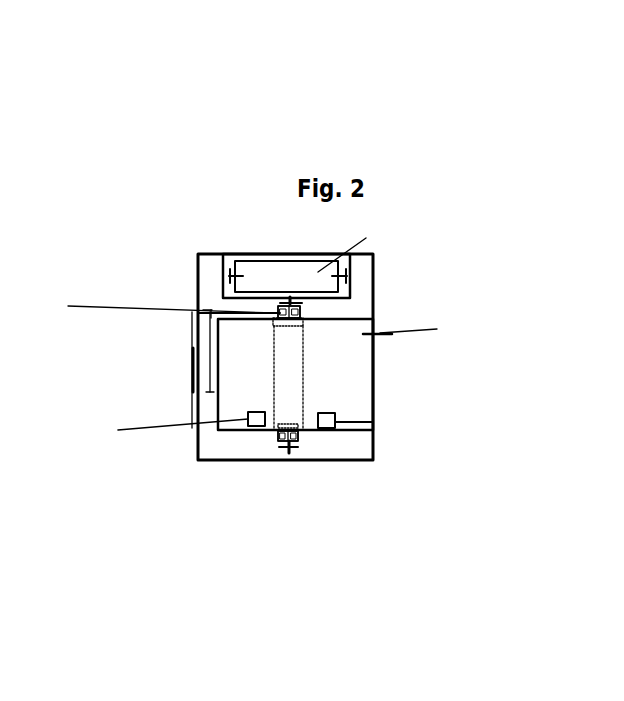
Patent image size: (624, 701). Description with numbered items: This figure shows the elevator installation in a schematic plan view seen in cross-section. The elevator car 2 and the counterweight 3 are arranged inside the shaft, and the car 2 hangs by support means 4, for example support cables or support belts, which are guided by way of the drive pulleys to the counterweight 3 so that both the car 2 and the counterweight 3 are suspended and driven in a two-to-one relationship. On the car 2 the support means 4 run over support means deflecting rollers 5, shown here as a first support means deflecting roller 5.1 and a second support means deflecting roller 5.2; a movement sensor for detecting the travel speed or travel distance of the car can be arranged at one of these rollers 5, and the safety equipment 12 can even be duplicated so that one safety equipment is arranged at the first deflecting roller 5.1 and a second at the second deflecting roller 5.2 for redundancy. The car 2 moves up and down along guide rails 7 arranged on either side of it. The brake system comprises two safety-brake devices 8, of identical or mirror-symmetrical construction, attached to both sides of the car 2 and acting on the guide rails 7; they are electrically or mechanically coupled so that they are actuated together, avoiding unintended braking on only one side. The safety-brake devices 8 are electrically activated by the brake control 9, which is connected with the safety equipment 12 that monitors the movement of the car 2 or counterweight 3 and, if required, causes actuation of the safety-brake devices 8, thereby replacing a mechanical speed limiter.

The elevator car 2 is at (326, 388).
The counterweight 3 is at (293, 287).
The support means 4 is at (302, 341).
The support means deflecting rollers 5 is at (269, 373).
The first support means deflecting roller 5.1 is at (270, 321).
The second support means deflecting roller 5.2 is at (313, 424).
The guide rails 7 is at (300, 303).
The safety-brake devices 8 is at (275, 310).
The brake control 9 is at (373, 423).
The safety equipment 12 is at (253, 412).